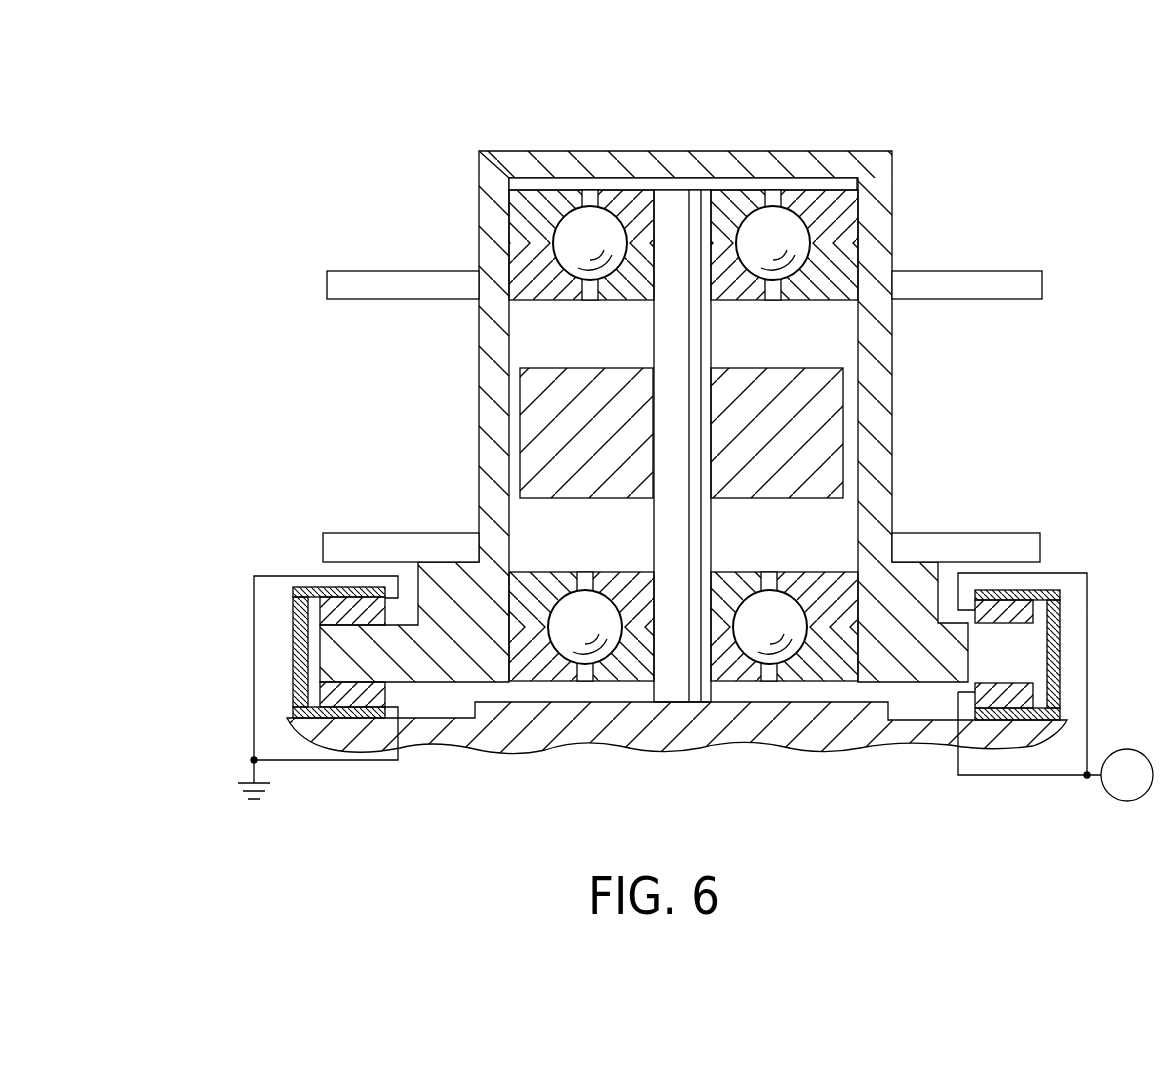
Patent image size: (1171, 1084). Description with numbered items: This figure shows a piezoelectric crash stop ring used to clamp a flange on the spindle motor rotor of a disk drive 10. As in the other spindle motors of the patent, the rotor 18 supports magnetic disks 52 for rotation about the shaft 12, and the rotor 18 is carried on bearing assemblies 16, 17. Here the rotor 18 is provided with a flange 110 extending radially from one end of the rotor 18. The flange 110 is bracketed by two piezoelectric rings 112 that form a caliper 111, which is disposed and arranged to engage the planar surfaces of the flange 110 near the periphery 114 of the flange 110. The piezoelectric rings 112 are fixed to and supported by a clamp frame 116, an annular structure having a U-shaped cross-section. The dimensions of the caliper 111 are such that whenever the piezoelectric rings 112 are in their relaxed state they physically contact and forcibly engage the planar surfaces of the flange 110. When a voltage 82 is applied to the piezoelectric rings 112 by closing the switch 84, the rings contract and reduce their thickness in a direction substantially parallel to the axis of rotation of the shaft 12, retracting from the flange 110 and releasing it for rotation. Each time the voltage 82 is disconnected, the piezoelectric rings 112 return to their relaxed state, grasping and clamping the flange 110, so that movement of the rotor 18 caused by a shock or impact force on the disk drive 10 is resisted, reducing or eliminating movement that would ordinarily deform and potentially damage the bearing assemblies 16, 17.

The disk drive 10 is at (600, 132).
The shaft 12 is at (683, 190).
The bearing assembly 16 is at (808, 203).
The bearing assembly 17 is at (820, 668).
The rotor 18 is at (485, 347).
The magnetic disks 52 is at (423, 282).
The voltage 82 is at (1104, 790).
The switch 84 is at (1100, 762).
The flange 110 is at (415, 663).
The caliper 111 is at (287, 643).
The piezoelectric rings 112 is at (332, 616).
The periphery 114 is at (293, 660).
The clamp frame 116 is at (303, 586).